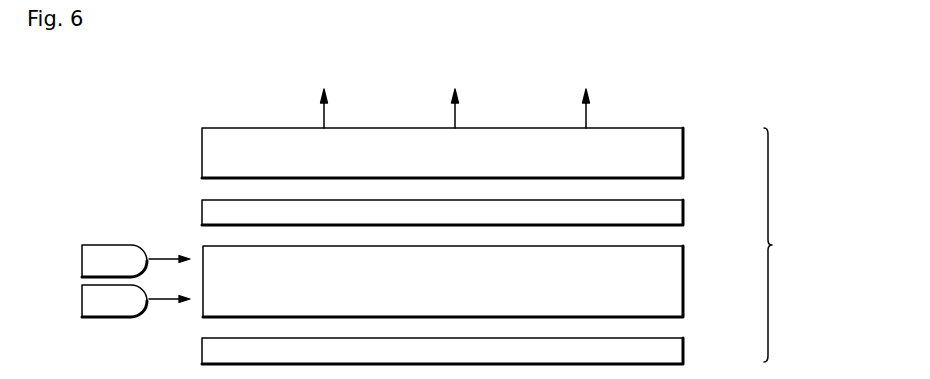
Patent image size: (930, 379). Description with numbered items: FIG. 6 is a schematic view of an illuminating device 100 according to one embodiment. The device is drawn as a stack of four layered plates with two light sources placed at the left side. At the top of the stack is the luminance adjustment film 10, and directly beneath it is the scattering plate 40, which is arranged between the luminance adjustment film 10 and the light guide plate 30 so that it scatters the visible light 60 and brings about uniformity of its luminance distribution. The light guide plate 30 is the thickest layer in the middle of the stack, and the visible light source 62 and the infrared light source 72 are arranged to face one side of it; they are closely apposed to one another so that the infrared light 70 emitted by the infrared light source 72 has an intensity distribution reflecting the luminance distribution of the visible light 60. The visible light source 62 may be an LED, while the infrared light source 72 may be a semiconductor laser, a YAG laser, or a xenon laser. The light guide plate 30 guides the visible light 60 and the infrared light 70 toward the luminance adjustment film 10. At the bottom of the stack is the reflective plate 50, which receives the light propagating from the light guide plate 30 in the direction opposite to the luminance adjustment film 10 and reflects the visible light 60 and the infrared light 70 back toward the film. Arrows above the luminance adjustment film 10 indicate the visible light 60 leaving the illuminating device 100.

The luminance adjustment film 10 is at (684, 152).
The scattering plate 40 is at (684, 210).
The light guide plate 30 is at (684, 280).
The reflective plate 50 is at (684, 350).
The illuminating device 100 is at (788, 245).
The visible light 60 is at (324, 113).
The infrared light 70 is at (165, 304).
The visible light source 62 is at (81, 262).
The infrared light source 72 is at (81, 302).